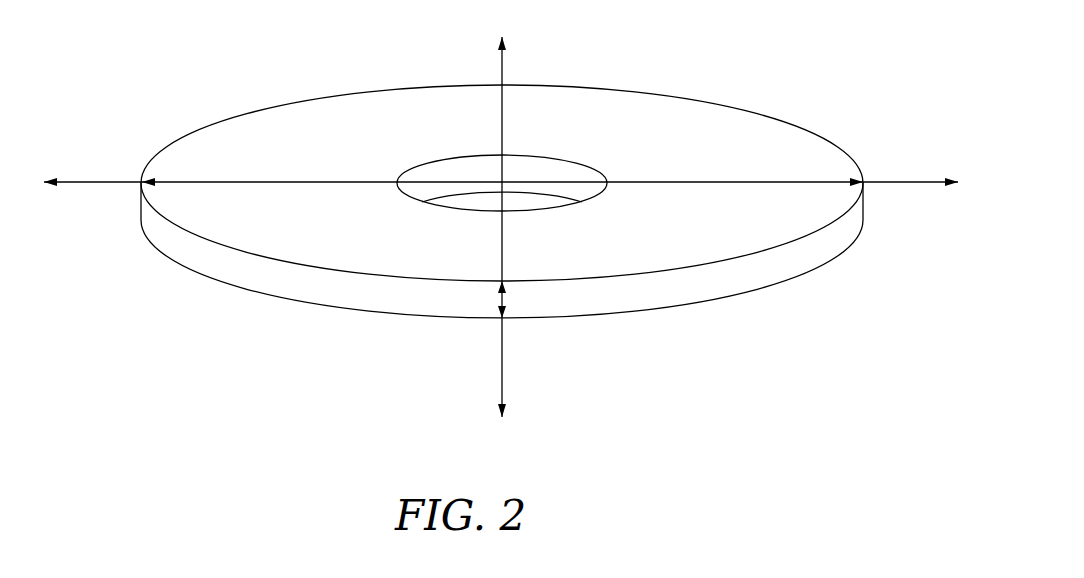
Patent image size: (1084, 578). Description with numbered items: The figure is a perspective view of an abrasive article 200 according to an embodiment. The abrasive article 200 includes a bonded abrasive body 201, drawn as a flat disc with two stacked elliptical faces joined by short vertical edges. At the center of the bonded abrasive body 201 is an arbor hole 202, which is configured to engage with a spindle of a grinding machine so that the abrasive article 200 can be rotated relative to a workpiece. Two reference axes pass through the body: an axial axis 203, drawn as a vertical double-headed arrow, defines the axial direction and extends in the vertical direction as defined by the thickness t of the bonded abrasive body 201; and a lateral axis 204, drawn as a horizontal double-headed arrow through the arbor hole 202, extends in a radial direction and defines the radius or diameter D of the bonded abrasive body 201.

The abrasive article 200 is at (484, 174).
The bonded abrasive body 201 is at (775, 138).
The arbor hole 202 is at (547, 185).
The axial axis 203 is at (498, 70).
The lateral axis 204 is at (900, 185).